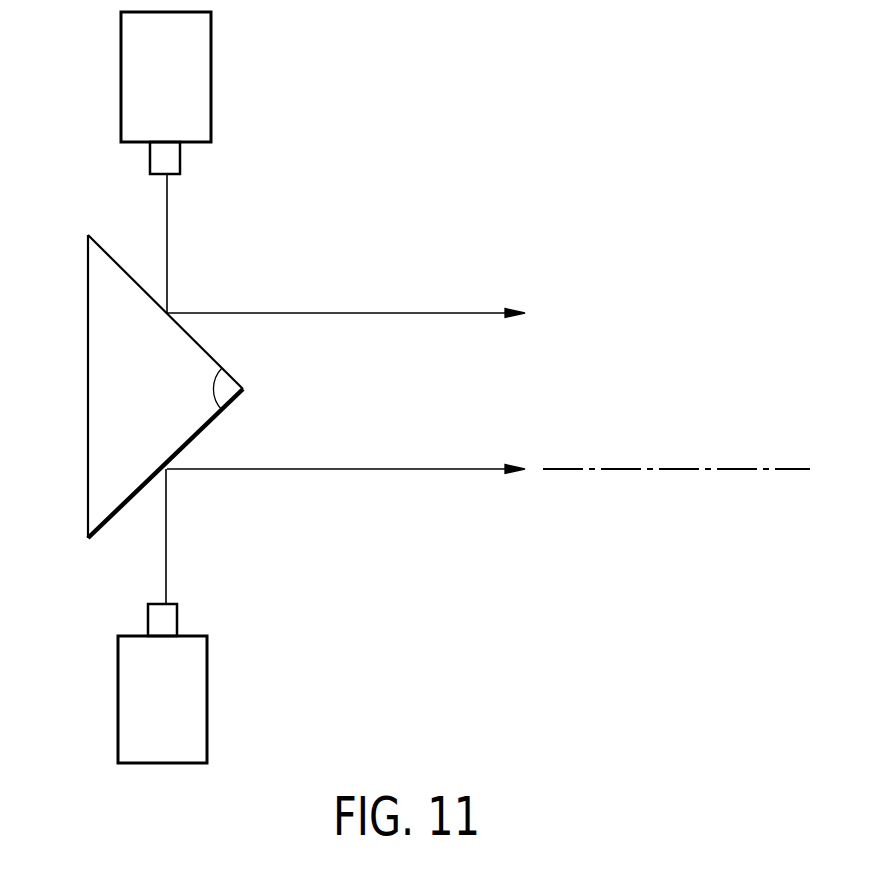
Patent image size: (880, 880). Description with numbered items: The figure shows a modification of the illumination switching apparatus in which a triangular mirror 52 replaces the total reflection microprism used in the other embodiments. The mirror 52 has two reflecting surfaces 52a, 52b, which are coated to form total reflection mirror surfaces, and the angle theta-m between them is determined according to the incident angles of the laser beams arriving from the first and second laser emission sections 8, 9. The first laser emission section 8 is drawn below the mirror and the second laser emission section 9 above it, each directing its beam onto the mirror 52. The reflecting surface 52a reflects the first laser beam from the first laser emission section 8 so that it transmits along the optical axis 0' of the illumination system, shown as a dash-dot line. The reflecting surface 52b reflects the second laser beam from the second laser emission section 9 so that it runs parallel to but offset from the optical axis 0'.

The second laser emission section 9 is at (212, 72).
The first laser emission section 8 is at (197, 635).
The triangular mirror 52 is at (164, 386).
The reflecting surface 52a is at (207, 427).
The reflecting surface 52b is at (207, 348).
The optical axis 0' is at (676, 506).